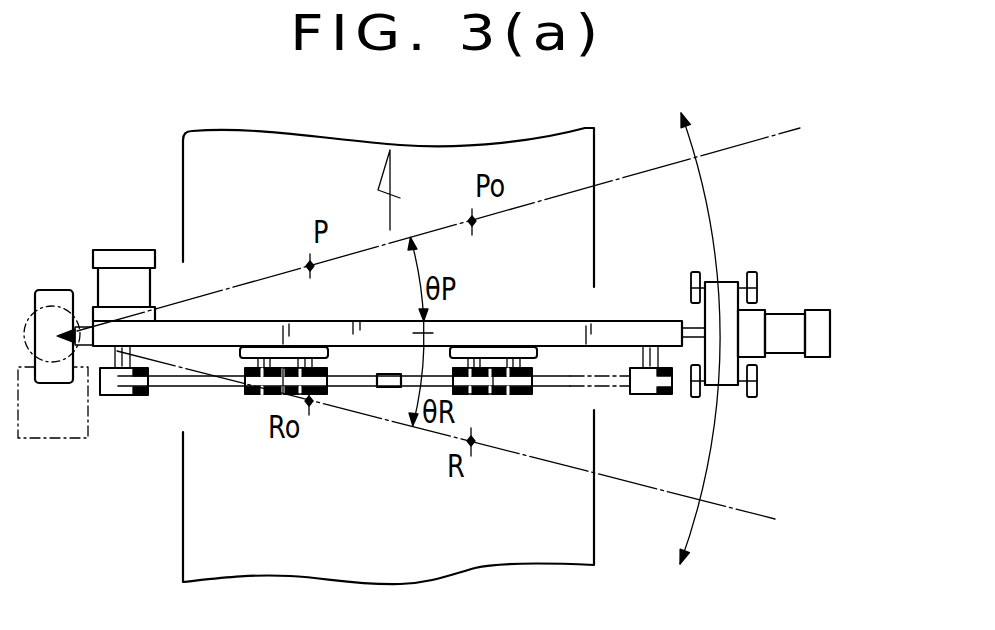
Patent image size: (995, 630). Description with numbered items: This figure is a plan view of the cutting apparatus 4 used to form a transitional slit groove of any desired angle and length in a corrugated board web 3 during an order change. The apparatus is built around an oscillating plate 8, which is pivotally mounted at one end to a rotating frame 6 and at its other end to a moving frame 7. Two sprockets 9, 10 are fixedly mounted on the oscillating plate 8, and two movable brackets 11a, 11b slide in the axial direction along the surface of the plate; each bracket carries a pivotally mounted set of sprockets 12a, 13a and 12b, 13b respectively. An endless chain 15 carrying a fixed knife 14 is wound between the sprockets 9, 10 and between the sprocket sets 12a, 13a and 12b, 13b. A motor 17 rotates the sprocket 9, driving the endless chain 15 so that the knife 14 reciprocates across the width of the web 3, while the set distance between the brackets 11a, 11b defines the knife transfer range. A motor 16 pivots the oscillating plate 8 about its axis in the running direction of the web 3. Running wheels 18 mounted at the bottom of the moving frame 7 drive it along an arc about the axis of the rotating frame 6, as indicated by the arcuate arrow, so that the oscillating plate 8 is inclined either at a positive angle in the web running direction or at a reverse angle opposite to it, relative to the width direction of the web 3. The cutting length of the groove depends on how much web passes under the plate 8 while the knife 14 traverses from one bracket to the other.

The corrugated board web 3 is at (200, 175).
The cutting apparatus 4 is at (62, 240).
The rotating frame 6 is at (48, 292).
The moving frame 7 is at (728, 283).
The oscillating plate 8 is at (567, 327).
The sprocket 9 is at (118, 395).
The sprocket 10 is at (648, 394).
The movable bracket 11a is at (288, 348).
The movable bracket 11b is at (495, 350).
The sprocket 12a is at (247, 394).
The sprocket 12b is at (509, 394).
The sprocket 13a is at (328, 396).
The sprocket 13b is at (478, 395).
The knife 14 is at (390, 388).
The endless chain 15 is at (177, 387).
The motor 16 is at (815, 357).
The motor 17 is at (123, 250).
The running wheels 18 is at (696, 272).